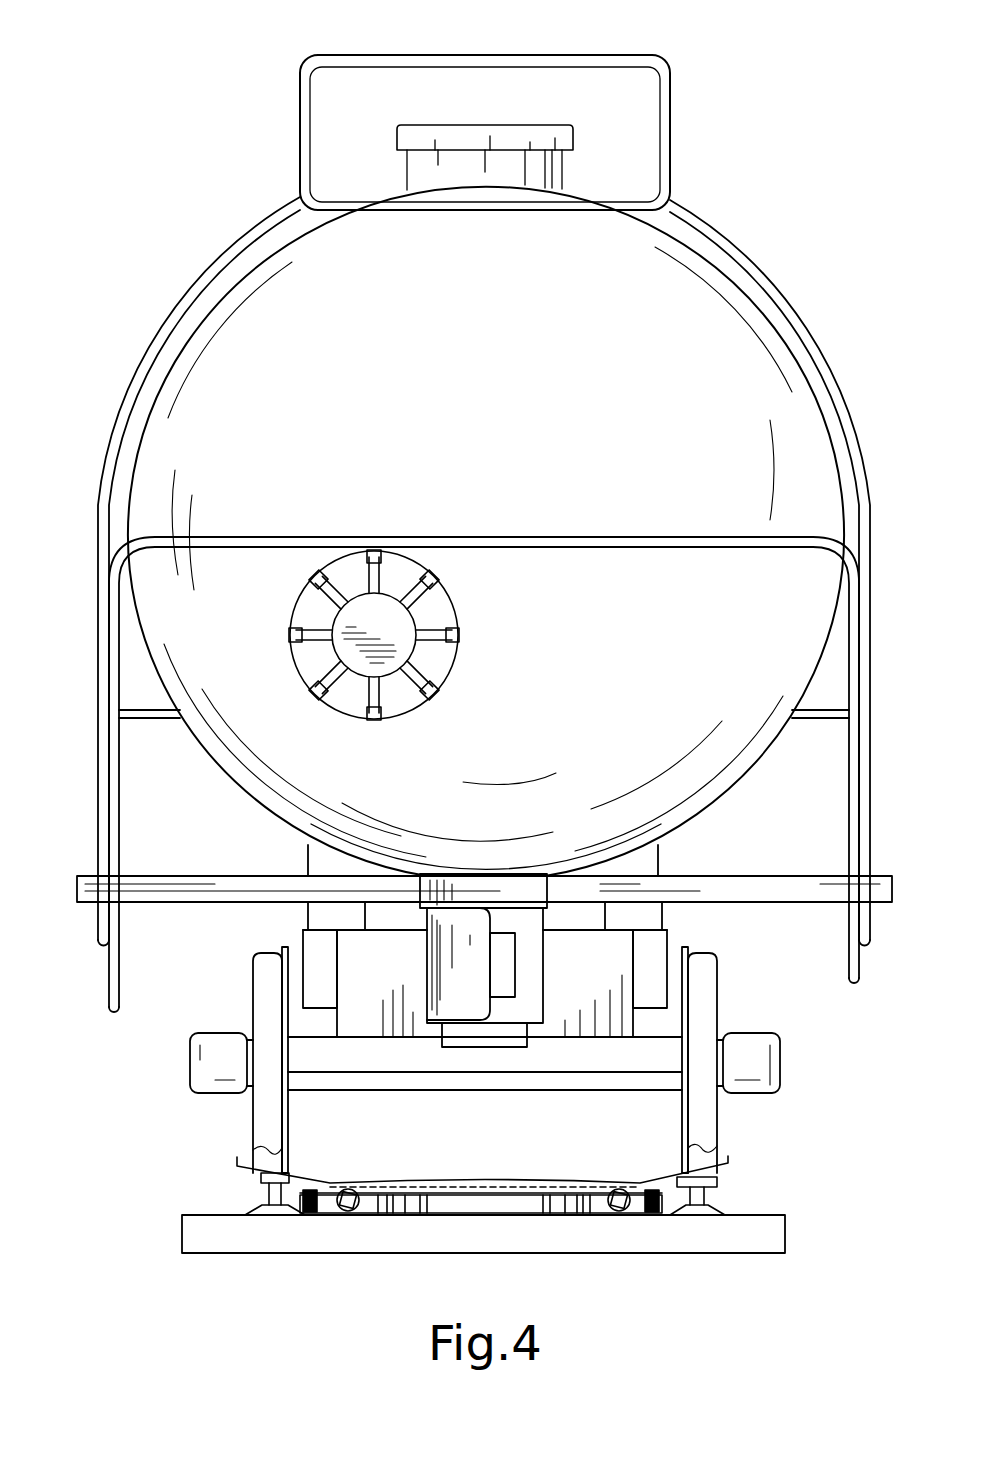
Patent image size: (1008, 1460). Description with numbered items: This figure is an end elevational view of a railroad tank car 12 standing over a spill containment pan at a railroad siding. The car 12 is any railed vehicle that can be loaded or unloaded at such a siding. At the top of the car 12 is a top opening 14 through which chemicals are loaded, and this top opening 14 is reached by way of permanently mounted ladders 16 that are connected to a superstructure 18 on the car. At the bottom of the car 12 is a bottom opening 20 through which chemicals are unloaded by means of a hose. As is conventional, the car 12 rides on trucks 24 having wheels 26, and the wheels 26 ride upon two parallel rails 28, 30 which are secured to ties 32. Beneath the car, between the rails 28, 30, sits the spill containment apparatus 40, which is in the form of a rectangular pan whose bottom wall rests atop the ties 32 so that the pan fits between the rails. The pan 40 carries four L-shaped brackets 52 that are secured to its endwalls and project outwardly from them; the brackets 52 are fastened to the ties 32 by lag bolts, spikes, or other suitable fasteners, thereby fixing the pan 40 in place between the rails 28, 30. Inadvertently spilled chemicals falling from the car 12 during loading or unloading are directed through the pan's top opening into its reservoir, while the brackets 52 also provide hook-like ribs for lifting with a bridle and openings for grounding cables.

The railroad tank car 12 is at (738, 170).
The top opening 14 is at (478, 132).
The ladders 16 is at (158, 333).
The superstructure 18 is at (420, 62).
The bottom opening 20 is at (503, 1037).
The trucks 24 is at (388, 1078).
The wheels 26 is at (267, 988).
The rail 28 is at (697, 1195).
The rail 30 is at (262, 1200).
The ties 32 is at (700, 1235).
The spill containment apparatus 40 is at (630, 1168).
The L-shaped brackets 52 is at (370, 1213).